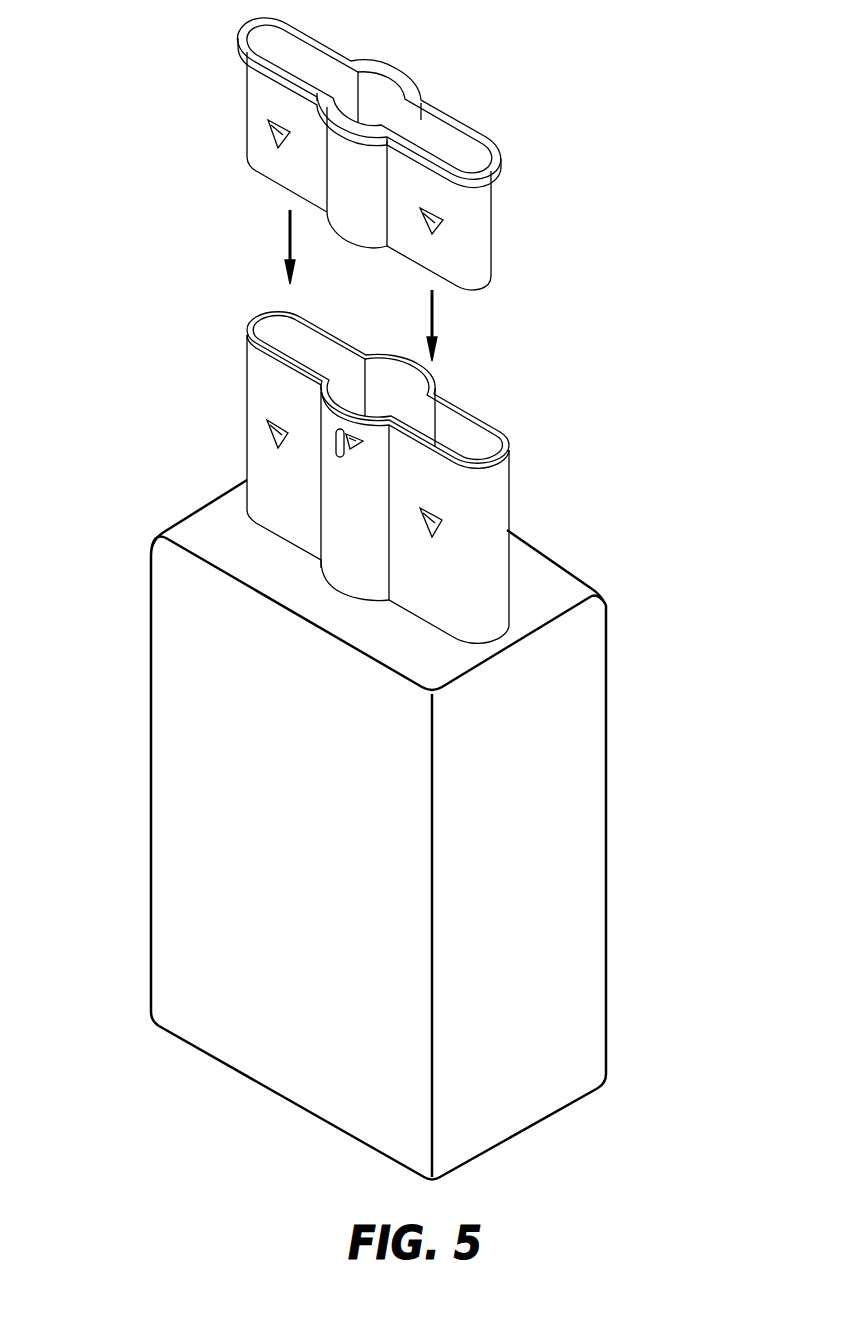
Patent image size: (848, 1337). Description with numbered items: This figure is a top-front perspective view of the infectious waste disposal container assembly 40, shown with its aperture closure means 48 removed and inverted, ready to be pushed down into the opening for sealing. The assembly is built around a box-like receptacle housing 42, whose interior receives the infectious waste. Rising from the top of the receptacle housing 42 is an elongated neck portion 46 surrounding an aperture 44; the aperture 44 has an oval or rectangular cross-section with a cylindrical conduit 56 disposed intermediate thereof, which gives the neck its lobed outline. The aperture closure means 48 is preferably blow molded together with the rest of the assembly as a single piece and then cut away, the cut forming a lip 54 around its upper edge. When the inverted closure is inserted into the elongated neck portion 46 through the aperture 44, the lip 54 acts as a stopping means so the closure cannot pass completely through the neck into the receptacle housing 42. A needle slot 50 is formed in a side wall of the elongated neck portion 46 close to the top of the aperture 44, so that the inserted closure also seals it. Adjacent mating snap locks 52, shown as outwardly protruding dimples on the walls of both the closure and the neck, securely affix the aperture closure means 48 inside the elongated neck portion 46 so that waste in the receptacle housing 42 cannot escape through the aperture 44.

The infectious waste disposal container assembly 40 is at (126, 793).
The receptacle housing 42 is at (306, 869).
The aperture 44 is at (462, 438).
The elongated neck portion 46 is at (511, 487).
The aperture closure means 48 is at (496, 217).
The needle slot 50 is at (337, 443).
The snap locks 52 is at (268, 134).
The lip 54 is at (256, 23).
The cylindrical conduit 56 is at (397, 361).